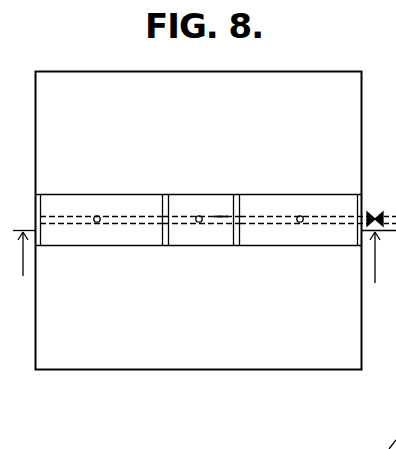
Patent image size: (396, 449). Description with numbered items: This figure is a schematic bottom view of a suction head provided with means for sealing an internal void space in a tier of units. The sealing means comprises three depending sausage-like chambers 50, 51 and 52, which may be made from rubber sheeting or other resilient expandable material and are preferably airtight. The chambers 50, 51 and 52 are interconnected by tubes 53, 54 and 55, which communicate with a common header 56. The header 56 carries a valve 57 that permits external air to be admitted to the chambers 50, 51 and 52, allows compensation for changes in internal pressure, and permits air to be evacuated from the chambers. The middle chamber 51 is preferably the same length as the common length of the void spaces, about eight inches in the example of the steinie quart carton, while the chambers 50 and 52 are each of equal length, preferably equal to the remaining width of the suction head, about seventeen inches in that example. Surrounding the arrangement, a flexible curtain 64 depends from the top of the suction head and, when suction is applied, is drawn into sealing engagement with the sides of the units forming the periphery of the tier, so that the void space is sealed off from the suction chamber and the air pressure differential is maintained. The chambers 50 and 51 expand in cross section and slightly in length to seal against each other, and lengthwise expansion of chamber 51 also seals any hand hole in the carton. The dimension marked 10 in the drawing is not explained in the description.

The chamber 50 is at (117, 239).
The chamber 51 is at (200, 237).
The chamber 52 is at (302, 239).
The tube 53 is at (97, 215).
The tube 54 is at (199, 215).
The tube 55 is at (300, 215).
The common header 56 is at (221, 215).
The valve 57 is at (375, 211).
The flexible curtain 64 is at (395, 86).
The datum line 10 is at (204, 264).